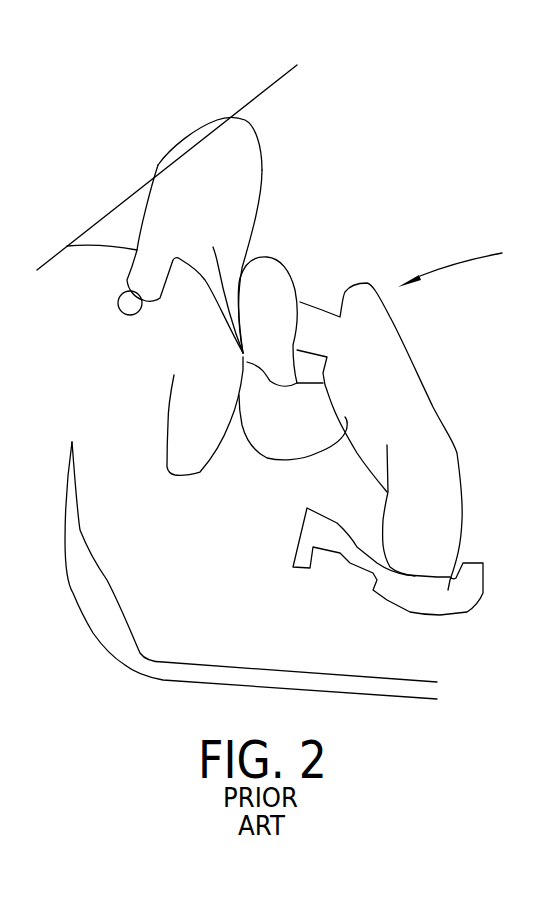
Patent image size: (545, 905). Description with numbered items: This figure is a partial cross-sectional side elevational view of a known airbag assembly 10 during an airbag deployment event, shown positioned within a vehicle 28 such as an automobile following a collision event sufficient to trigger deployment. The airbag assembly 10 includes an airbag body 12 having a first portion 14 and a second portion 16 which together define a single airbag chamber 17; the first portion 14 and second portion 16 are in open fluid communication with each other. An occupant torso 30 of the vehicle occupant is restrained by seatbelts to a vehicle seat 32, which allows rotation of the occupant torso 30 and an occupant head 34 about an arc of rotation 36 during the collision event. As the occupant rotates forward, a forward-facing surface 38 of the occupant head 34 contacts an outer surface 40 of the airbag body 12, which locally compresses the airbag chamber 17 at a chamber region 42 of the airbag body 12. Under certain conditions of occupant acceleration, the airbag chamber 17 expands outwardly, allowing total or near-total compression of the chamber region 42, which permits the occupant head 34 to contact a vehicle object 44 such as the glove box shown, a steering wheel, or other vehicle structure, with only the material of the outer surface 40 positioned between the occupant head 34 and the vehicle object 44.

The airbag assembly 10 is at (170, 138).
The airbag body 12 is at (263, 207).
The first portion 14 is at (220, 133).
The second portion 16 is at (277, 442).
The airbag chamber 17 is at (227, 160).
The vehicle 28 is at (97, 613).
The occupant torso 30 is at (420, 413).
The vehicle seat 32 is at (452, 580).
The occupant head 34 is at (270, 280).
The arc of rotation 36 is at (455, 261).
The forward-facing surface 38 is at (243, 357).
The outer surface 40 is at (263, 172).
The chamber region 42 is at (213, 247).
The vehicle object 44 is at (243, 363).